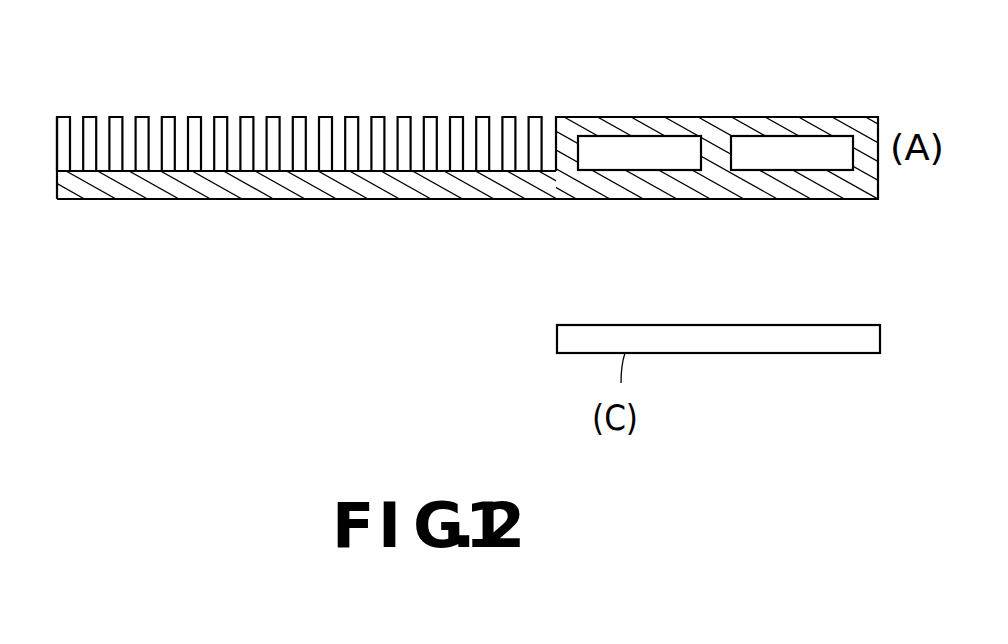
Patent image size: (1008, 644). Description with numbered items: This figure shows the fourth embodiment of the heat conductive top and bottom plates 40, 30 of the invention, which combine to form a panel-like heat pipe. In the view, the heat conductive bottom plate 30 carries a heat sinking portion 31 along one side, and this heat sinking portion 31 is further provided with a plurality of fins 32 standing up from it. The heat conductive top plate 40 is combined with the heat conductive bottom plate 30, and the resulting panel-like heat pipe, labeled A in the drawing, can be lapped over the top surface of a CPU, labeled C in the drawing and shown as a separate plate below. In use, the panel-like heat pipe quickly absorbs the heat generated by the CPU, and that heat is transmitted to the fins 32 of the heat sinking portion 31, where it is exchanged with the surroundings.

The heat conductive bottom plate 30 is at (522, 149).
The heat sinking portion 31 is at (203, 199).
The fins 32 is at (248, 118).
The heat conductive top plate 40 is at (725, 118).